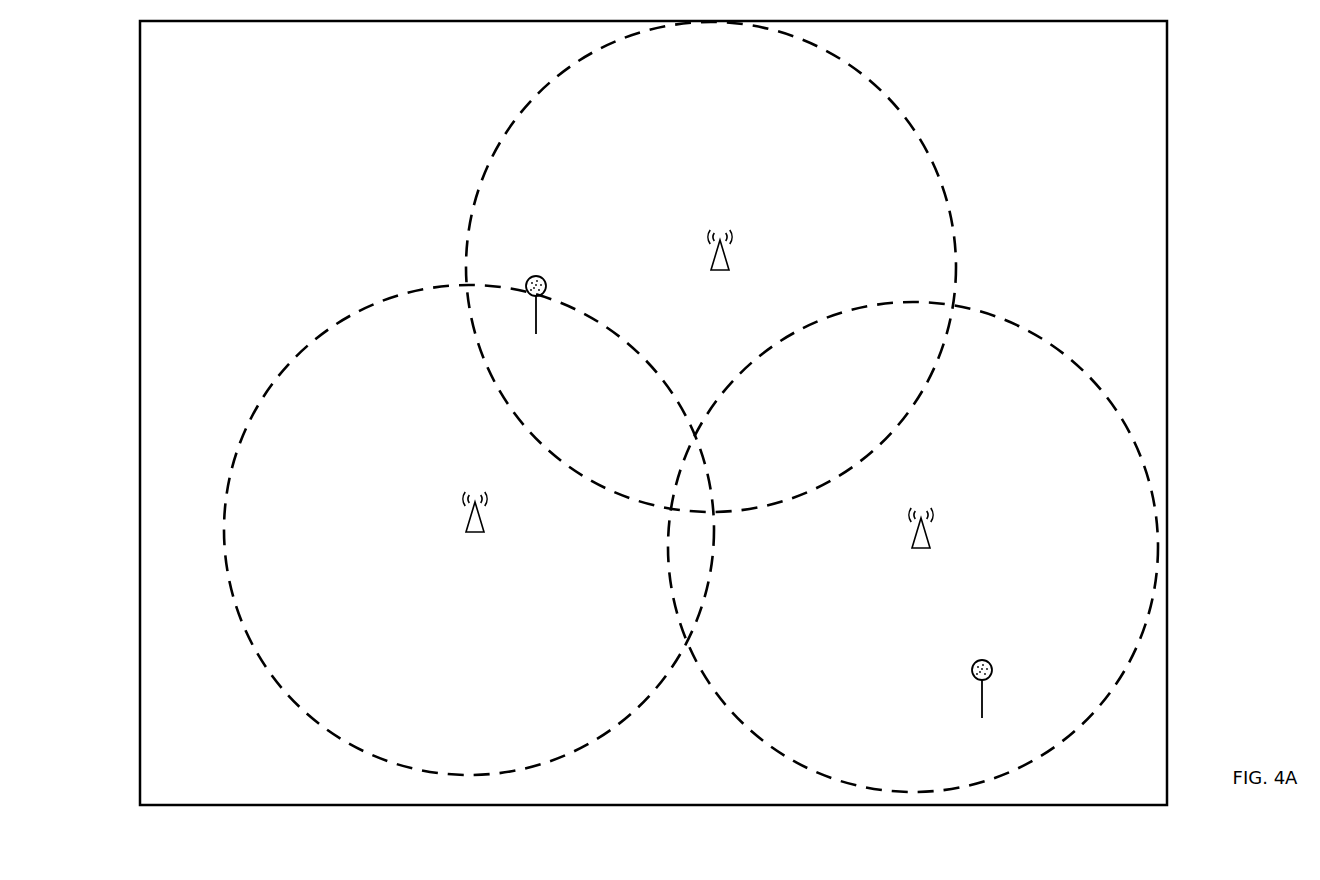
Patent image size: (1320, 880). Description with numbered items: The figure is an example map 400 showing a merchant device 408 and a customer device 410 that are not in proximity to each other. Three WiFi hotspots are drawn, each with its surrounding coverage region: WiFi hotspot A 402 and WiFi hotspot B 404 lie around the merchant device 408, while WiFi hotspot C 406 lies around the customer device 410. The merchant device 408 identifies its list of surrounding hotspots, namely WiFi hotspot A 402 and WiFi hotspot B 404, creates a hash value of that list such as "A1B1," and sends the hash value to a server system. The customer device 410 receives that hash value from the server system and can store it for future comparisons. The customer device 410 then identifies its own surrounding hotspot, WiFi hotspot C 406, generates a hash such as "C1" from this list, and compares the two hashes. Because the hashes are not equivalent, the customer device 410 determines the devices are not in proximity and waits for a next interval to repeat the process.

The map 400 is at (653, 413).
The WiFi hotspot A 402 is at (469, 530).
The WiFi hotspot B 404 is at (711, 267).
The WiFi hotspot C 406 is at (913, 547).
The merchant device 408 is at (539, 328).
The customer device 410 is at (988, 713).